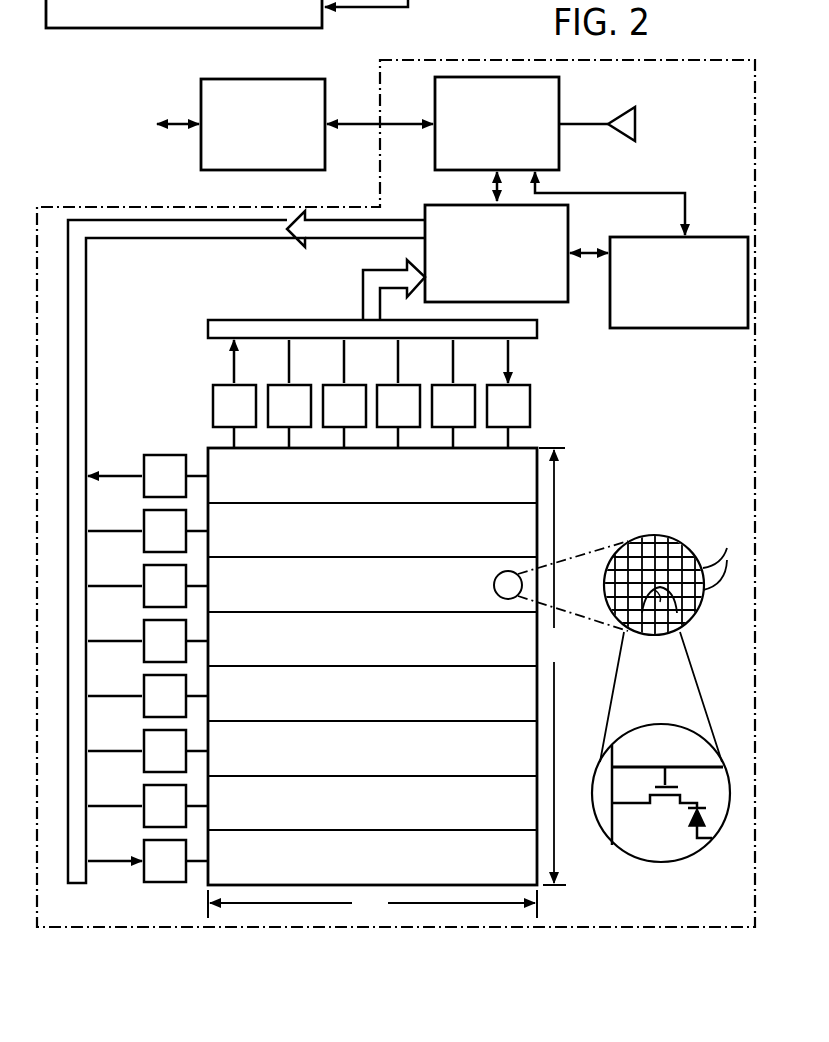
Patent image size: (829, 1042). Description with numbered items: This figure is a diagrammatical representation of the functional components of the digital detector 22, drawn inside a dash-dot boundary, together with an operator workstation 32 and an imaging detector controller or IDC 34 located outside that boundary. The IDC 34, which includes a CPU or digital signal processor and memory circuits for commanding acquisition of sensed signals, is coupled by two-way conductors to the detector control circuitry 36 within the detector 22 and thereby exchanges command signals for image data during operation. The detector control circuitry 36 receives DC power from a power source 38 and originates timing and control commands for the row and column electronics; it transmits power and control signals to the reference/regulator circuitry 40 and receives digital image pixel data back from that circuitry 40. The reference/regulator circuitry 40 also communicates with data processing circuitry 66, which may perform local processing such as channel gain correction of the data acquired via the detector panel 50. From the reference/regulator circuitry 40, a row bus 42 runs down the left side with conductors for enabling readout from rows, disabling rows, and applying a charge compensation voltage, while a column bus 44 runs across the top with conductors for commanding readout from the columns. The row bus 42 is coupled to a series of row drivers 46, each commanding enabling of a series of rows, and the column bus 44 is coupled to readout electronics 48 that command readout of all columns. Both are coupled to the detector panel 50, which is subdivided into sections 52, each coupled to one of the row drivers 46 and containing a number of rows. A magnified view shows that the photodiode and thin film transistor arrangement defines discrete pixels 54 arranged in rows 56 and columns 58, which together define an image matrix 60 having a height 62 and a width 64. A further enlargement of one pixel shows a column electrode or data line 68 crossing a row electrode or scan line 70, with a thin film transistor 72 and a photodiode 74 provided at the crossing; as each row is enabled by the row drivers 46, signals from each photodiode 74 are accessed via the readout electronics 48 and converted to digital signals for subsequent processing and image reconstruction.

The digital detector 22 is at (705, 60).
The operator workstation 32 is at (46, 10).
The imaging detector controller (IDC) 34 is at (201, 100).
The detector control circuitry 36 is at (559, 145).
The power source 38 is at (635, 122).
The reference/regulator circuitry 40 is at (568, 222).
The row bus 42 is at (86, 290).
The column bus 44 is at (248, 320).
The row drivers 46 is at (144, 575).
The readout electronics 48 is at (494, 383).
The detector panel 50 is at (541, 486).
The sections 52 is at (372, 649).
The pixels 54 is at (685, 557).
The rows 56 is at (723, 557).
The columns 58 is at (647, 637).
The image matrix 60 is at (622, 638).
The height 62 is at (555, 666).
The width 64 is at (372, 904).
The data processing circuitry 66 is at (680, 329).
The column electrode (data line) 68 is at (612, 824).
The row electrode (scan line) 70 is at (680, 767).
The thin film transistor 72 is at (655, 784).
The photodiode 74 is at (692, 820).